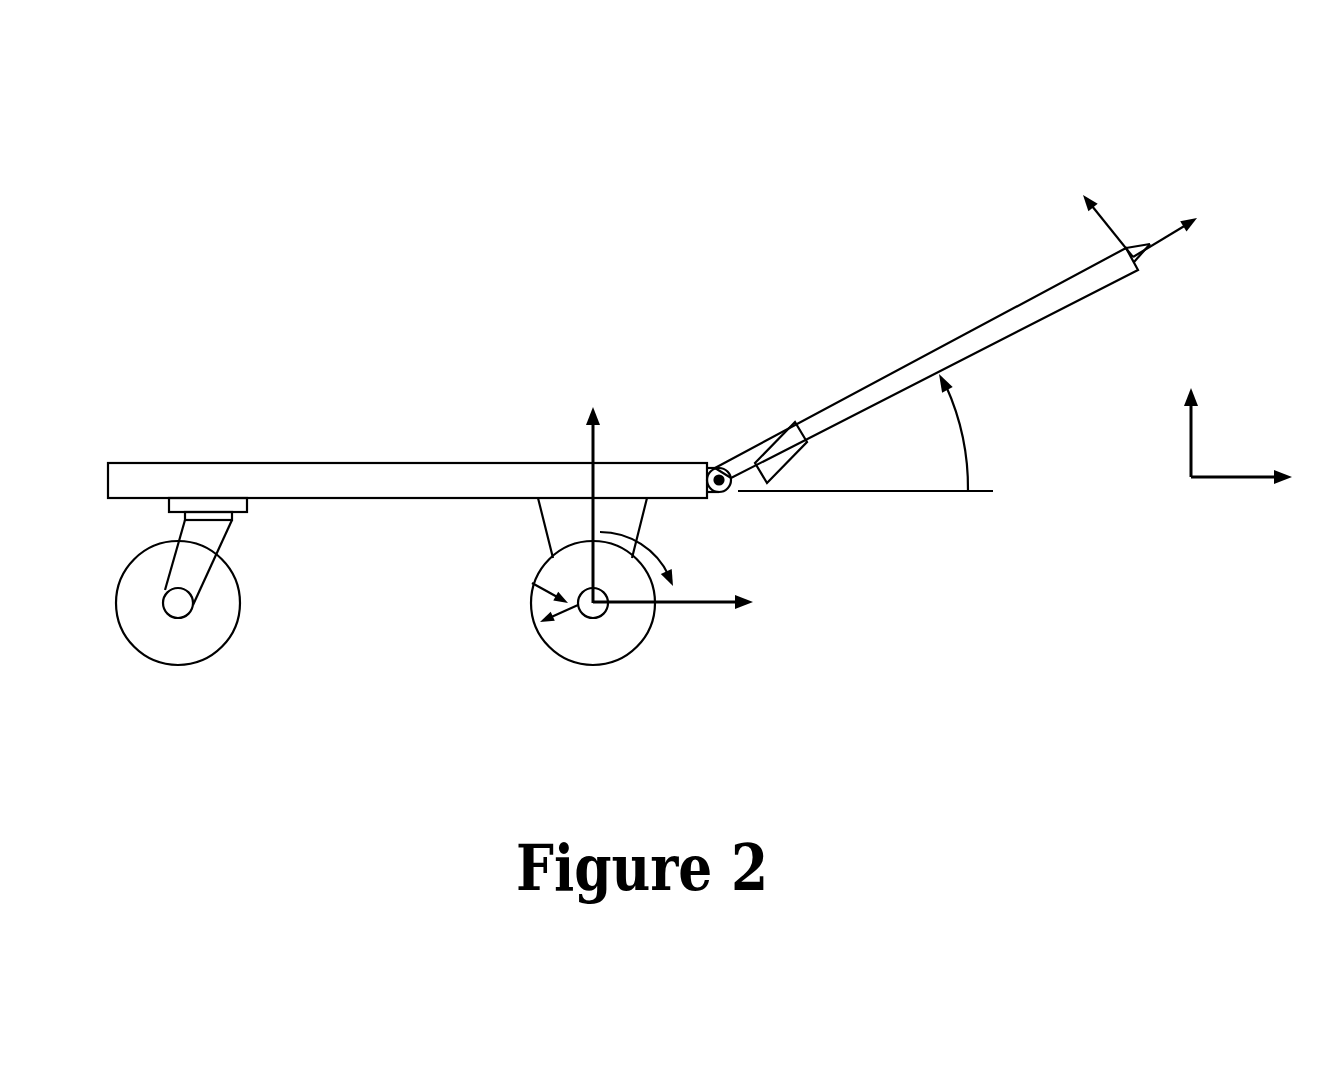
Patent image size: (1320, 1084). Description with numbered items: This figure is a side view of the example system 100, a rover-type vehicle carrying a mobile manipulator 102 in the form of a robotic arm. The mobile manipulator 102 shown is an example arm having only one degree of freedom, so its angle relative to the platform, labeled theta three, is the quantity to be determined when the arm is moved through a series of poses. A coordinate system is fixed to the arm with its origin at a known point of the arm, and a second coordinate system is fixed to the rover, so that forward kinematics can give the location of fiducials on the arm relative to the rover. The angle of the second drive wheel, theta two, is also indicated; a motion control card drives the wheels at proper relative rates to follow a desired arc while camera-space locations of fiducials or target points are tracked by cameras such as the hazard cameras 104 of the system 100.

The system 100 is at (700, 367).
The mobile manipulator 102 is at (993, 317).
The hazard cameras 104 is at (593, 581).